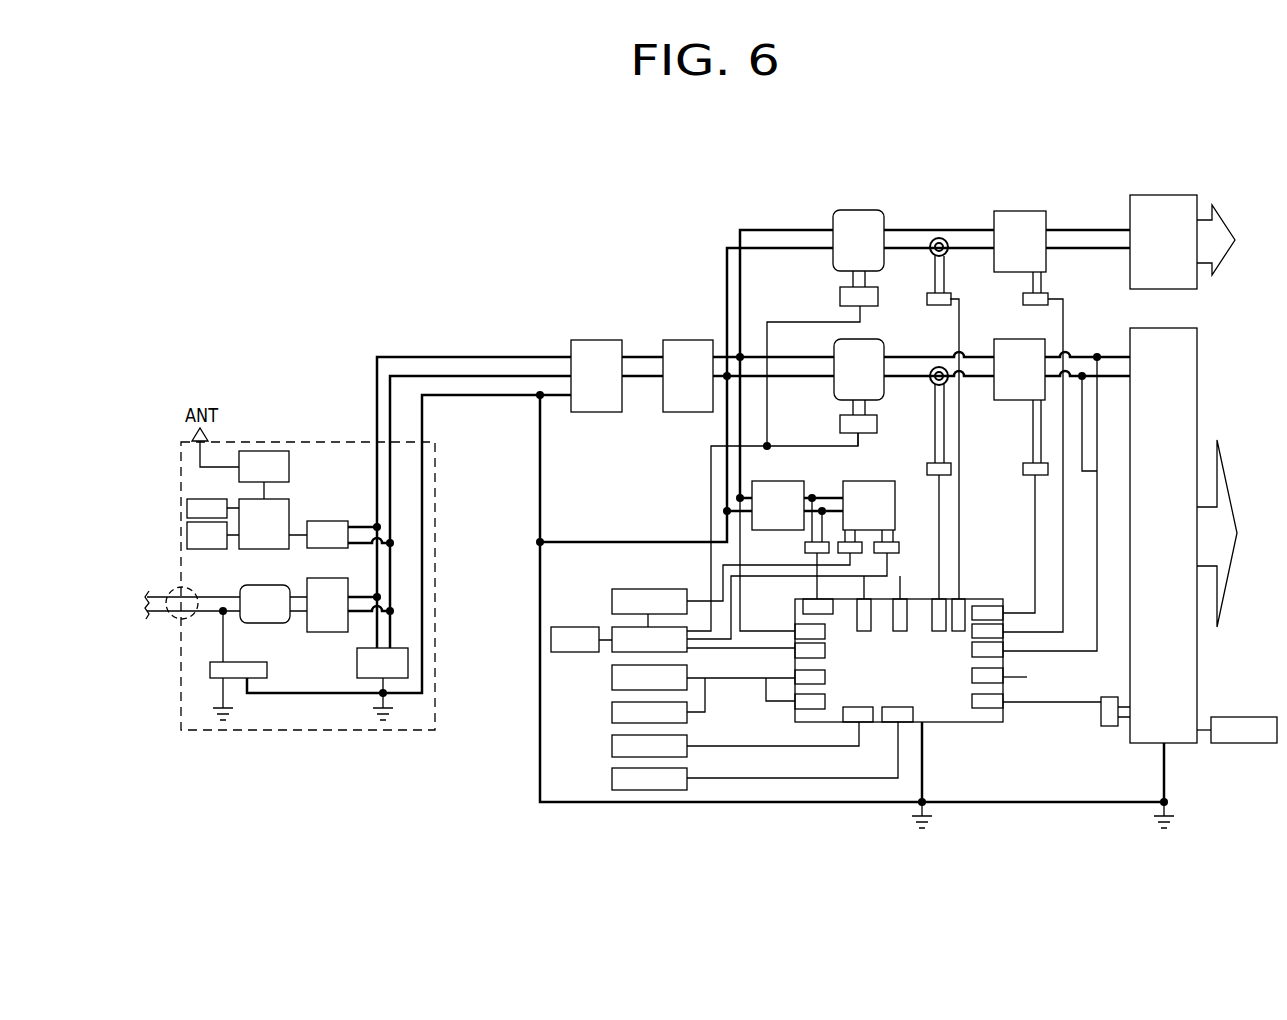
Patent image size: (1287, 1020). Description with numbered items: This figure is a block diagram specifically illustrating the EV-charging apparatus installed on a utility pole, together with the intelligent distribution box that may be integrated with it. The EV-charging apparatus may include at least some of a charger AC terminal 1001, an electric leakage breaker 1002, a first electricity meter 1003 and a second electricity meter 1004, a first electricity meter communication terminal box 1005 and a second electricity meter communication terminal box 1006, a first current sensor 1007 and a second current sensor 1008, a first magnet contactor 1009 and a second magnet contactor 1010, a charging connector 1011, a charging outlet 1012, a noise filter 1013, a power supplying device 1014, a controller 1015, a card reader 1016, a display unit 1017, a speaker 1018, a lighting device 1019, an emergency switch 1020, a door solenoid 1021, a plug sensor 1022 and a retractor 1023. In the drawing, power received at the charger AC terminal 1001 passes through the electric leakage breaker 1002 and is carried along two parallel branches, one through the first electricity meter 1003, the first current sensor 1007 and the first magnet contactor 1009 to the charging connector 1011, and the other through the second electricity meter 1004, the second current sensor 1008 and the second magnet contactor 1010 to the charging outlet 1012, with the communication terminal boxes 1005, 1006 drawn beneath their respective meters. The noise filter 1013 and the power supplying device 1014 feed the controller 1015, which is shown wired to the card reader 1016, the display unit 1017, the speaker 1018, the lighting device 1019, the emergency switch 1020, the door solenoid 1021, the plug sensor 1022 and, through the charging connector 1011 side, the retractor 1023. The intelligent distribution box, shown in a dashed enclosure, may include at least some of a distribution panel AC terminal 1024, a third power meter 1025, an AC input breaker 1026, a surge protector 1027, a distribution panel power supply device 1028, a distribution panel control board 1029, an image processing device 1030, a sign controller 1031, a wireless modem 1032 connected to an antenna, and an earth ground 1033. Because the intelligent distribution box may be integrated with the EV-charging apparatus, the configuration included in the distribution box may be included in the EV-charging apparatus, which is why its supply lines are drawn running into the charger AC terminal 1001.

The charger AC terminal 1001 is at (597, 340).
The electric leakage breaker 1002 is at (686, 340).
The first electricity meter 1003 is at (862, 339).
The second electricity meter 1004 is at (858, 210).
The first electricity meter communication terminal box 1005 is at (840, 424).
The second electricity meter communication terminal box 1006 is at (840, 296).
The first current sensor 1007 is at (934, 386).
The second current sensor 1008 is at (940, 238).
The first magnet contactor 1009 is at (1025, 339).
The second magnet contactor 1010 is at (1019, 211).
The charging connector 1011 is at (1197, 350).
The charging outlet 1012 is at (1164, 195).
The noise filter 1013 is at (765, 481).
The power supplying device 1014 is at (855, 481).
The controller 1015 is at (947, 723).
The card reader 1016 is at (622, 589).
The display unit 1017 is at (612, 627).
The speaker 1018 is at (580, 627).
The lighting device 1019 is at (612, 678).
The emergency switch 1020 is at (612, 712).
The door solenoid 1021 is at (612, 746).
The plug sensor 1022 is at (612, 778).
The retractor 1023 is at (1244, 717).
The distribution panel AC terminal 1024 is at (174, 617).
The third power meter 1025 is at (247, 585).
The AC input breaker 1026 is at (333, 632).
The surge protector 1027 is at (357, 665).
The distribution panel power supply device 1028 is at (325, 521).
The distribution panel control board 1029 is at (246, 549).
The image processing device 1030 is at (186, 551).
The sign controller 1031 is at (187, 499).
The wireless modem 1032 is at (289, 466).
The earth ground 1033 is at (210, 676).